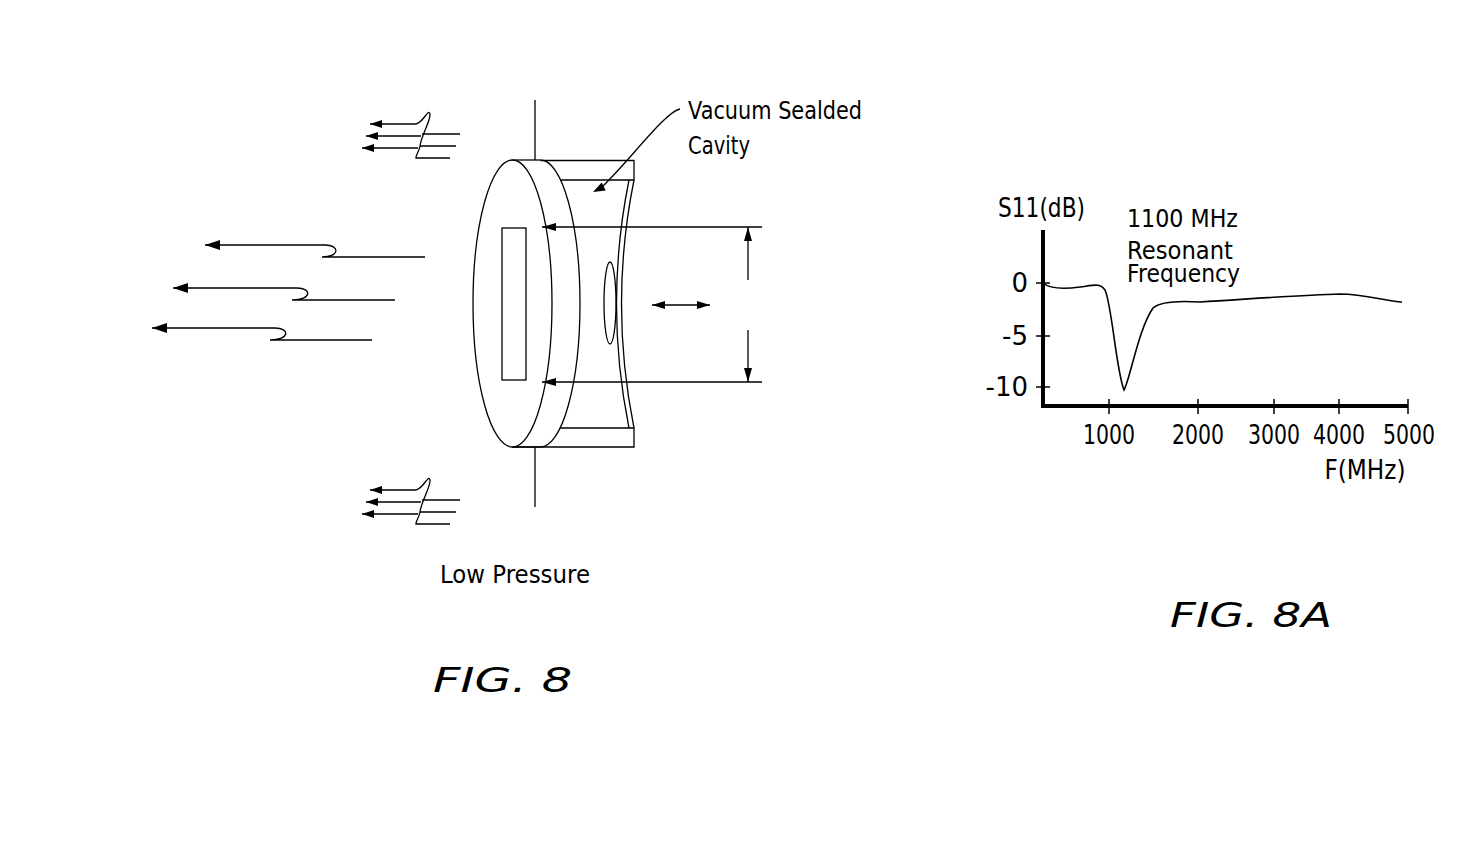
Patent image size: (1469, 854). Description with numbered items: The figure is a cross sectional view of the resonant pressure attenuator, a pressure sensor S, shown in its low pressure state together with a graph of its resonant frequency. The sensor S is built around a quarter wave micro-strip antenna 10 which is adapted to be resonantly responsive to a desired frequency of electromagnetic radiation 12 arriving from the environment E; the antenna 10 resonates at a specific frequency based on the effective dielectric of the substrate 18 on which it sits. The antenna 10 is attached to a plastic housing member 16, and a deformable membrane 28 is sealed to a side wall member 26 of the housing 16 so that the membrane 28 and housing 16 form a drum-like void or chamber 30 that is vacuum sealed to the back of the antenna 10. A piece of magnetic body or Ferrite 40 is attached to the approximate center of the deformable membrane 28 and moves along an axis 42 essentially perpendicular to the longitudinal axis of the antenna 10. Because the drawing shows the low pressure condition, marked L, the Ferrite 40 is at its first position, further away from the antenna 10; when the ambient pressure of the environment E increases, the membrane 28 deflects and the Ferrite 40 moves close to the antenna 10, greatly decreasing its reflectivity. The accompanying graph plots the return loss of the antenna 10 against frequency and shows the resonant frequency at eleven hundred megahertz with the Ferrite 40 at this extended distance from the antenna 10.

The antenna member 10 is at (517, 228).
The electromagnetic radiation 12 is at (281, 290).
The housing member 16 is at (612, 458).
The substrate 18 is at (505, 415).
The side wall member 26 is at (580, 172).
The deformable membrane 28 is at (630, 410).
The chamber 30 is at (581, 413).
The Ferrite member 40 is at (620, 273).
The axis 42 is at (680, 303).
The pressure sensor S is at (666, 453).
The low pressure side L is at (334, 213).
The environment E is at (220, 400).